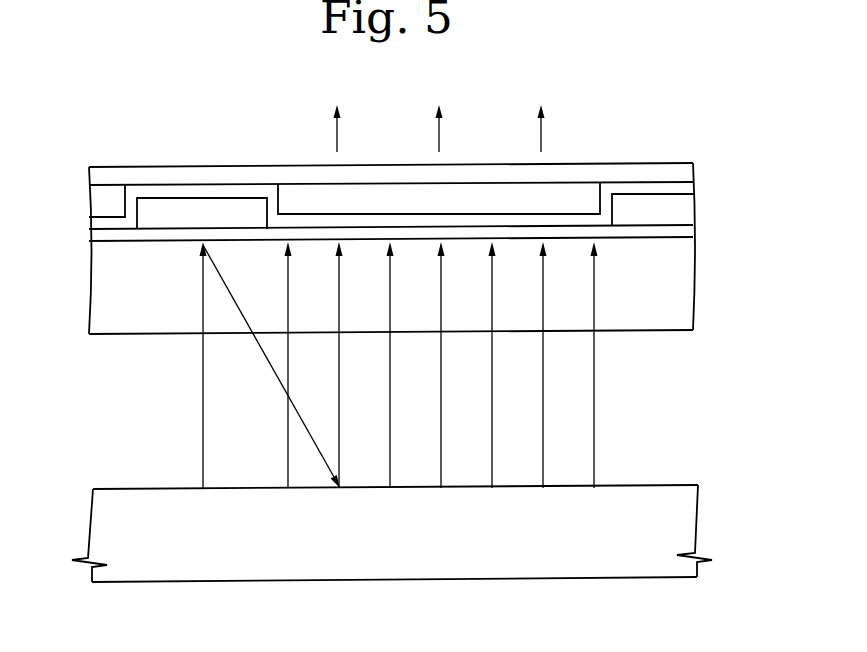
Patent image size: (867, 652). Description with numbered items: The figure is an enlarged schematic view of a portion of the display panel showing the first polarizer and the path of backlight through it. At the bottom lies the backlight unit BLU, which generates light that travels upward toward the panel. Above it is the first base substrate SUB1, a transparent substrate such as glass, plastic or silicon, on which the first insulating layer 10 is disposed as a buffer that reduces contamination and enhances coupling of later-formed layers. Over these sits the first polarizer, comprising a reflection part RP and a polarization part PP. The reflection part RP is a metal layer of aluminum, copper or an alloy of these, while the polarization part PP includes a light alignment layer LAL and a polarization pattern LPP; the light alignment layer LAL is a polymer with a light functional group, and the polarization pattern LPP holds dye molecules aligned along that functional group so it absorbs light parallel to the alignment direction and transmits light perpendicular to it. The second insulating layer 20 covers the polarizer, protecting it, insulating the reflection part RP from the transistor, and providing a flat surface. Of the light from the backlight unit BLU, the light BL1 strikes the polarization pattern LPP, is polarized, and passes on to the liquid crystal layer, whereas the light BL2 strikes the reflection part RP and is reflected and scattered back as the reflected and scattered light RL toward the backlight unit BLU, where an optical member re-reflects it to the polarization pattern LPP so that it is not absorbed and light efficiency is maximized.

The second insulating layer 20 is at (678, 173).
The first insulating layer 10 is at (683, 232).
The first base substrate SUB1 is at (682, 283).
The polarization part PP is at (486, 145).
The polarization pattern LPP is at (575, 196).
The light alignment layer LAL is at (653, 165).
The reflection part RP is at (157, 222).
The backlight unit BLU is at (682, 527).
The light BL1 is at (594, 408).
The light BL2 is at (203, 412).
The reflected and scattered light RL is at (270, 365).